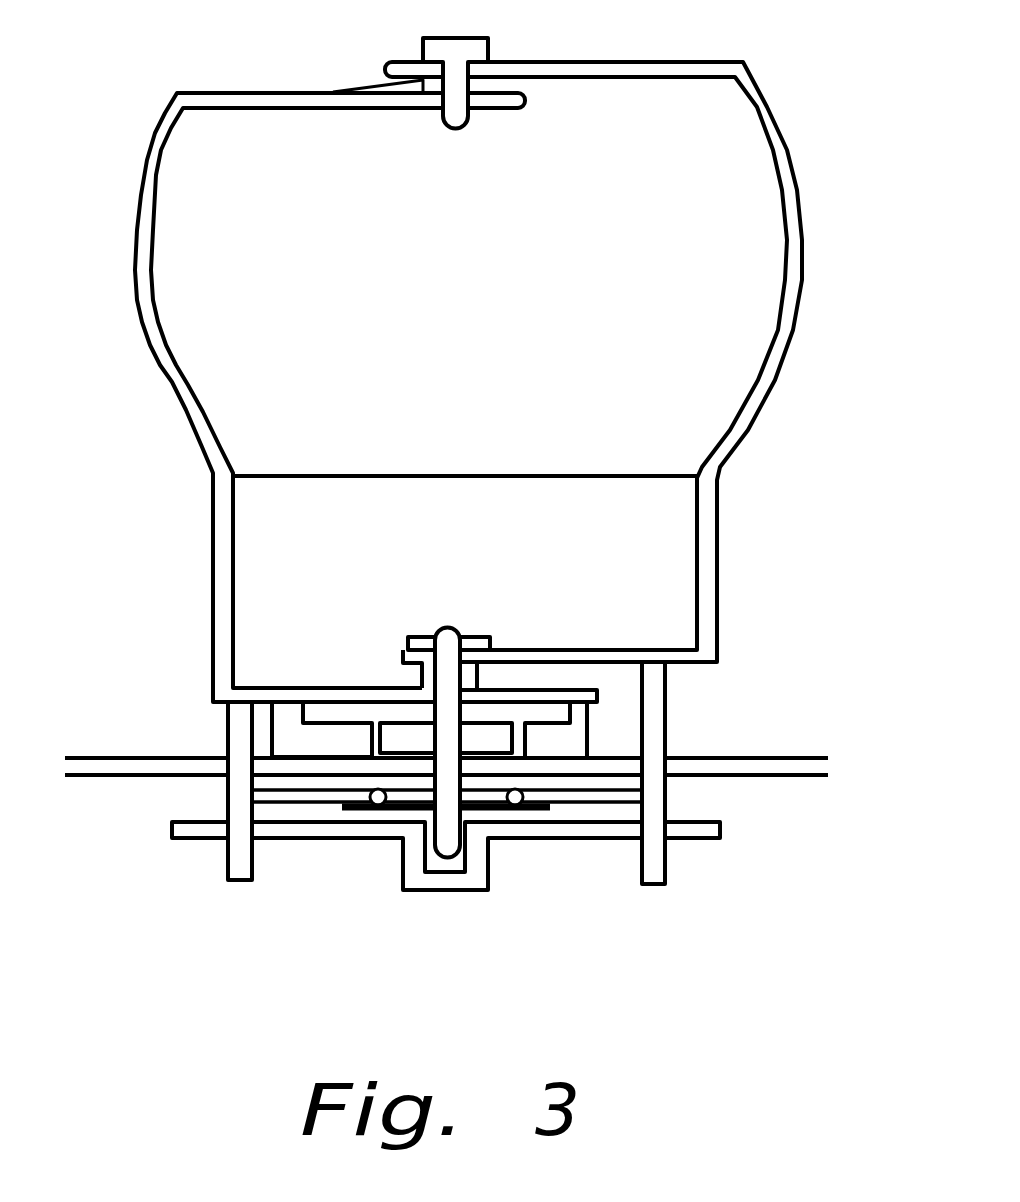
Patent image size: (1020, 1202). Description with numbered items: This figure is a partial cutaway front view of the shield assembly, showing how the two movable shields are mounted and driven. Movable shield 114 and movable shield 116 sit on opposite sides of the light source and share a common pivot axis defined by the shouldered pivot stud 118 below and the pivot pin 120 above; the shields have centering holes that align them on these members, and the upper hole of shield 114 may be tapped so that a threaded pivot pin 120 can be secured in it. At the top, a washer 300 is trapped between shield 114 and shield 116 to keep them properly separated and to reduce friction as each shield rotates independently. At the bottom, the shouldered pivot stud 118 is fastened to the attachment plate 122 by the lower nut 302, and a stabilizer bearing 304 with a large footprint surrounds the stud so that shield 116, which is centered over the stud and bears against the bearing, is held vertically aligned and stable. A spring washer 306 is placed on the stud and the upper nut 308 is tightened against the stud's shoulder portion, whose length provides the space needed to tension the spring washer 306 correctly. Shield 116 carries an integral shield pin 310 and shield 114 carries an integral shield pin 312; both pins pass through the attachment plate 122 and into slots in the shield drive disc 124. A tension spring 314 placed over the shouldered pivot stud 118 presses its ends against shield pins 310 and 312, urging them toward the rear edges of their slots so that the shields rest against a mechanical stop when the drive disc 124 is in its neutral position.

The movable shield 114 is at (804, 258).
The movable shield 116 is at (135, 296).
The shouldered pivot stud 118 is at (450, 628).
The pivot pin 120 is at (490, 44).
The attachment plate 122 is at (115, 758).
The shield drive disc 124 is at (722, 833).
The washer 300 is at (420, 86).
The lower nut 302 is at (412, 792).
The stabilizer bearing 304 is at (285, 715).
The spring washer 306 is at (413, 678).
The upper nut 308 is at (490, 645).
The shield pin 310 is at (228, 808).
The shield pin 312 is at (665, 863).
The tension spring 314 is at (302, 803).